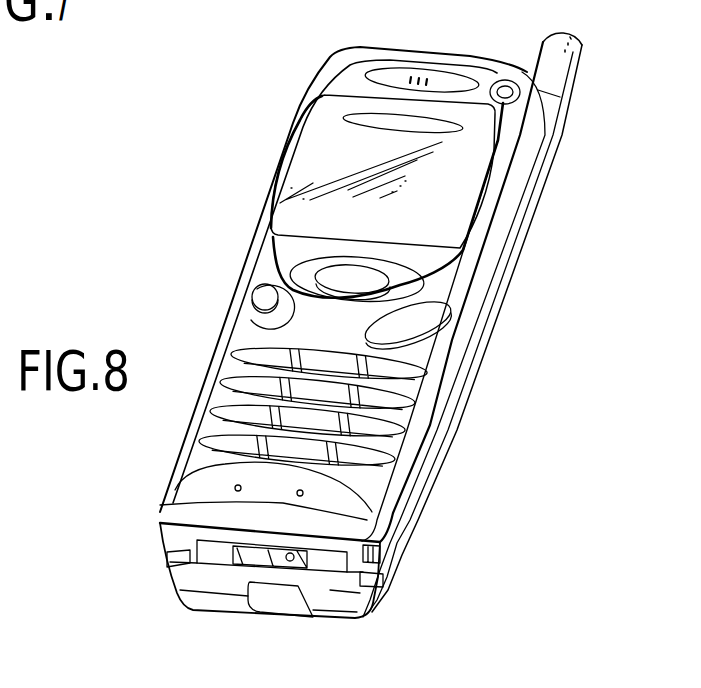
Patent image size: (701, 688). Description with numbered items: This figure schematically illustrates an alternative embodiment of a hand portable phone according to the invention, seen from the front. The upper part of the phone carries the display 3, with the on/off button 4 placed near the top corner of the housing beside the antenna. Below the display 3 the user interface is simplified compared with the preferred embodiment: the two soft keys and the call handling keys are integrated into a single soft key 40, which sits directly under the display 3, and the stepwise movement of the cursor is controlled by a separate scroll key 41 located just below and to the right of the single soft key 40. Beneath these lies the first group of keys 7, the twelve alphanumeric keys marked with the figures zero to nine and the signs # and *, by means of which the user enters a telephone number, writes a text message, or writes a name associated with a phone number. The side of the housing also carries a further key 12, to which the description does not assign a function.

The display 3 is at (473, 185).
The on/off button 4 is at (505, 88).
The first group of keys 7 is at (407, 418).
The side key 12 is at (262, 295).
The single soft key 40 is at (368, 278).
The scroll key 41 is at (407, 323).